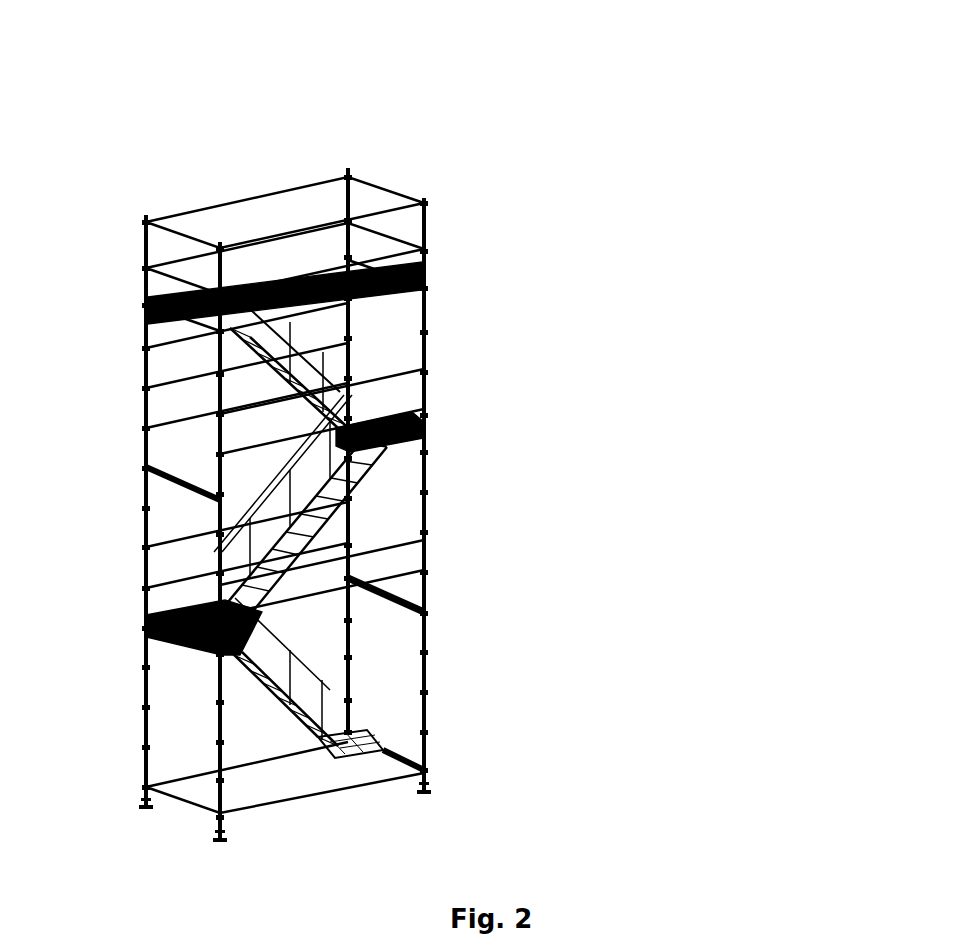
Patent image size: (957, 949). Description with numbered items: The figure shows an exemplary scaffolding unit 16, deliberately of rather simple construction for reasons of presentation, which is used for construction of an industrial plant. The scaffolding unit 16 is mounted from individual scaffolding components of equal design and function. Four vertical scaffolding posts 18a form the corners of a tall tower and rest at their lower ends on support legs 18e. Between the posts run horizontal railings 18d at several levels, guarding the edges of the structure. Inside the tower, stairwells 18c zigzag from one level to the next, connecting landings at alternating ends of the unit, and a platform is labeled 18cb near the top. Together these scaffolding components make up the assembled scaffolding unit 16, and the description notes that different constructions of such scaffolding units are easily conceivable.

The scaffolding unit 16 is at (515, 96).
The scaffolding posts 18a is at (350, 201).
The stairwells 18c is at (232, 387).
The top platform / deck 18cb is at (383, 296).
The railings 18d is at (308, 248).
The support legs 18e is at (427, 790).